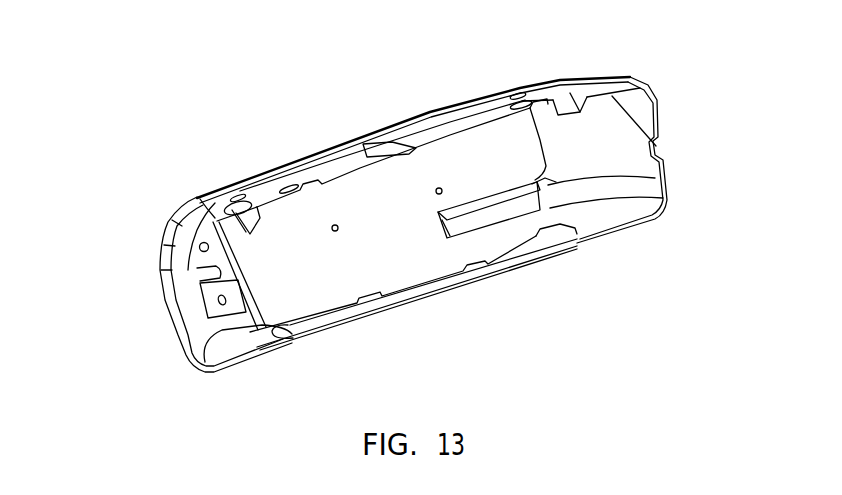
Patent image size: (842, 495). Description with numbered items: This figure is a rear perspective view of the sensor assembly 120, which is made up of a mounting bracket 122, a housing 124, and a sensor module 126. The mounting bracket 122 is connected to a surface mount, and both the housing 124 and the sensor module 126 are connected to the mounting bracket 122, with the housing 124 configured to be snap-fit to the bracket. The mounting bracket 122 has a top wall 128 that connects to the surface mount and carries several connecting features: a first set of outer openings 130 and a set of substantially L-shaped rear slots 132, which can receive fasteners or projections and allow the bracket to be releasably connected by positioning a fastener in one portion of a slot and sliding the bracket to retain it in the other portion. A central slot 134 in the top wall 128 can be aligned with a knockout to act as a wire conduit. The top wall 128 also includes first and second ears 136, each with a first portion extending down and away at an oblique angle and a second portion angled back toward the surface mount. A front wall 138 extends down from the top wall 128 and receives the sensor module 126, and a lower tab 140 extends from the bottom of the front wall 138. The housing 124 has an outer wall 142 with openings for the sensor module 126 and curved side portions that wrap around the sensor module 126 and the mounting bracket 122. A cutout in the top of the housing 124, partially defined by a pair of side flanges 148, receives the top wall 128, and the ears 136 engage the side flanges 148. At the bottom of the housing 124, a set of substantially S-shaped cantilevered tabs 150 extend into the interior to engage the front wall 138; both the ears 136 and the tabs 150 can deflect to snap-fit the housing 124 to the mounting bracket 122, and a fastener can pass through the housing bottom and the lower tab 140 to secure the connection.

The sensor assembly 120 is at (164, 157).
The mounting bracket 122 is at (336, 157).
The housing 124 is at (634, 76).
The sensor module 126 is at (663, 179).
The top wall 128 is at (428, 132).
The outer openings 130 is at (520, 88).
The L-shaped rear slots 132 is at (284, 187).
The central slot 134 is at (388, 143).
The ears 136 is at (572, 101).
The front wall 138 is at (320, 280).
The lower tab 140 is at (473, 272).
The outer wall 142 is at (170, 307).
The side flanges 148 is at (215, 213).
The cantilevered tabs 150 is at (553, 240).